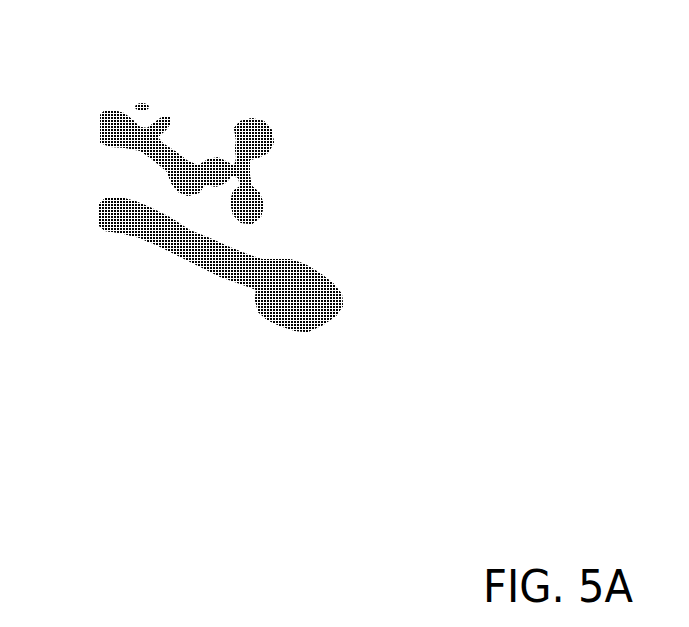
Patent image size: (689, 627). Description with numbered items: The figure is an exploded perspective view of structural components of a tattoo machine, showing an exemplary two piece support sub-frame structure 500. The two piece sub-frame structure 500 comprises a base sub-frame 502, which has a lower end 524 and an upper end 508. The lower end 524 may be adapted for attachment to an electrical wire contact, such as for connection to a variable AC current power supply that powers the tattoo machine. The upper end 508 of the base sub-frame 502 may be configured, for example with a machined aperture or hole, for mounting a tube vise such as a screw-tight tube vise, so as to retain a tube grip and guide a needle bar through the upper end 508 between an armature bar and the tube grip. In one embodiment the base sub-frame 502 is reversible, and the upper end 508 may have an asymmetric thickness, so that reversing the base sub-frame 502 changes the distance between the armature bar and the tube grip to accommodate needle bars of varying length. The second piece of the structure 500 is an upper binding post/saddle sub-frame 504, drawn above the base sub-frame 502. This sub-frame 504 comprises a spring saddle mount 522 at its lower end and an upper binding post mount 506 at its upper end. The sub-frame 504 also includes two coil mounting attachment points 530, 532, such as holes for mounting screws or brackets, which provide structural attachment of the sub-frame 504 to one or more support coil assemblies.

The two piece sub-frame structure 500 is at (302, 463).
The base sub-frame 502 is at (198, 273).
The upper binding post/saddle sub-frame 504 is at (207, 137).
The upper binding post mount 506 is at (272, 143).
The upper end 508 is at (337, 303).
The spring saddle mount 522 is at (135, 102).
The lower end 524 is at (122, 217).
The coil mounting attachment point 530 is at (175, 180).
The coil mounting attachment point 532 is at (250, 207).